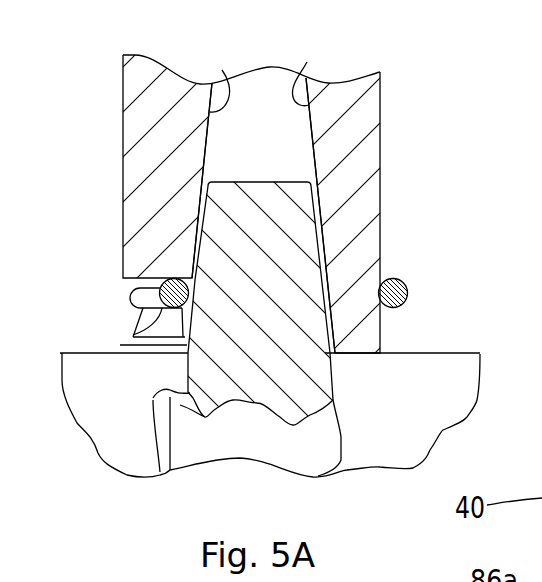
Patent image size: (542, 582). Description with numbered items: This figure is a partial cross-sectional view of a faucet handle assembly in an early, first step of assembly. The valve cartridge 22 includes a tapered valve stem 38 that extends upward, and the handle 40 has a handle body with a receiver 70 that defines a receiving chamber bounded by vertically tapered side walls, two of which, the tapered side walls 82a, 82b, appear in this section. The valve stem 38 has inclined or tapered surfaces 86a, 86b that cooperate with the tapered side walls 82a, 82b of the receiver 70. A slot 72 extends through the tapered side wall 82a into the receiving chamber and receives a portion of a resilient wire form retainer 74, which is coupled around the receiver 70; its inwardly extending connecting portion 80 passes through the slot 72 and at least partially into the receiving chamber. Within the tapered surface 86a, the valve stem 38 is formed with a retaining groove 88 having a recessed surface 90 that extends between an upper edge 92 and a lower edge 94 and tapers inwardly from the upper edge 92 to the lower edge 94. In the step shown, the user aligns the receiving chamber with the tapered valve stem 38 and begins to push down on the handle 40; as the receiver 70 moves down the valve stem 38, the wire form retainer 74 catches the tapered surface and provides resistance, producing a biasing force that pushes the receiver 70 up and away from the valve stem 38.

The valve cartridge 22 is at (346, 433).
The valve stem 38 is at (257, 195).
The handle 40 is at (140, 118).
The receiver 70 is at (362, 117).
The slot 72 is at (133, 331).
The wire form retainer 74 is at (412, 282).
The connecting portion 80 is at (159, 288).
The tapered side wall 82a is at (222, 70).
The tapered side wall 82b is at (307, 62).
The tapered surface 86a is at (200, 213).
The tapered surface 86b is at (320, 242).
The retaining groove 88 is at (153, 398).
The recessed surface 90 is at (177, 373).
The upper edge 92 is at (187, 328).
The lower edge 94 is at (160, 472).